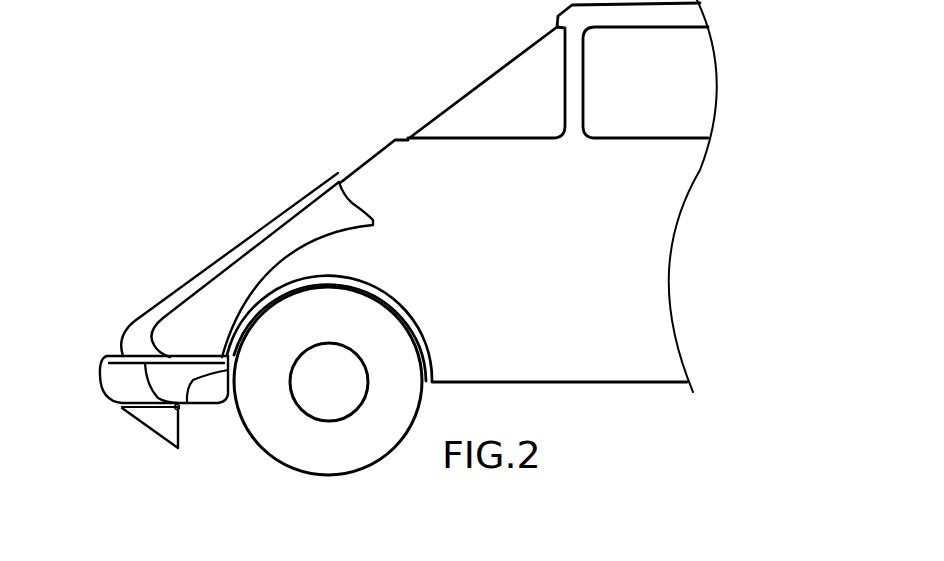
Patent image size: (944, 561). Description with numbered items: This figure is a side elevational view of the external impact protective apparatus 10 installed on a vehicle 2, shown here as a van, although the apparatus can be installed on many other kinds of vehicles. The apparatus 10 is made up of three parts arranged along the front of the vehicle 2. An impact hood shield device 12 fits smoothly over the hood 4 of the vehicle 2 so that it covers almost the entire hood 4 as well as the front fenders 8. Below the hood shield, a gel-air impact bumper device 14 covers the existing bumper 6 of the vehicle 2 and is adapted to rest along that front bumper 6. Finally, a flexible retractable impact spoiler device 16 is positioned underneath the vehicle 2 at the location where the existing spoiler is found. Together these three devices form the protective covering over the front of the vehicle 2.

The vehicle 2 is at (563, 360).
The hood 4 is at (368, 158).
The bumper 6 is at (145, 389).
The front fenders 8 is at (260, 293).
The external impact protective apparatus 10 is at (149, 300).
The impact hood shield device 12 is at (293, 210).
The gel-air impact bumper device 14 is at (100, 378).
The flexible retractable impact spoiler device 16 is at (162, 433).